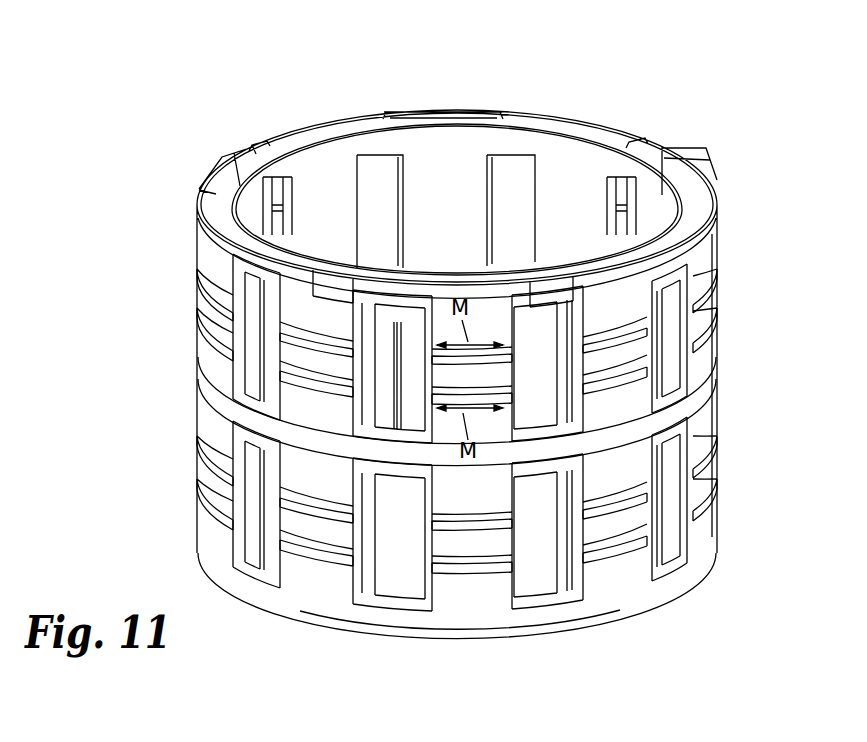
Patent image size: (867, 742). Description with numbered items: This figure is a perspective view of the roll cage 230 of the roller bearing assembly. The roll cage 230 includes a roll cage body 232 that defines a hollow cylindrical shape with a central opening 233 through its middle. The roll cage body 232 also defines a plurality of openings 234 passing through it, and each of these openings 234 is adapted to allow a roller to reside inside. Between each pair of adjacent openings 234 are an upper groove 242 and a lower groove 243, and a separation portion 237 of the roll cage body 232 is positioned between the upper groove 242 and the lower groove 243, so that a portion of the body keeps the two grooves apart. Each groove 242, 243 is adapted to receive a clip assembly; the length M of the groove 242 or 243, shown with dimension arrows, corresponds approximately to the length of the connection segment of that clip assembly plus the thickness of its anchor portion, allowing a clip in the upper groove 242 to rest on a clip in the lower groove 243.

The roll cage 230 is at (681, 137).
The roll cage body 232 is at (488, 499).
The central opening 233 is at (454, 160).
The openings 234 is at (388, 336).
The separation portion 237 is at (317, 532).
The upper groove 242 is at (313, 338).
The lower groove 243 is at (312, 378).